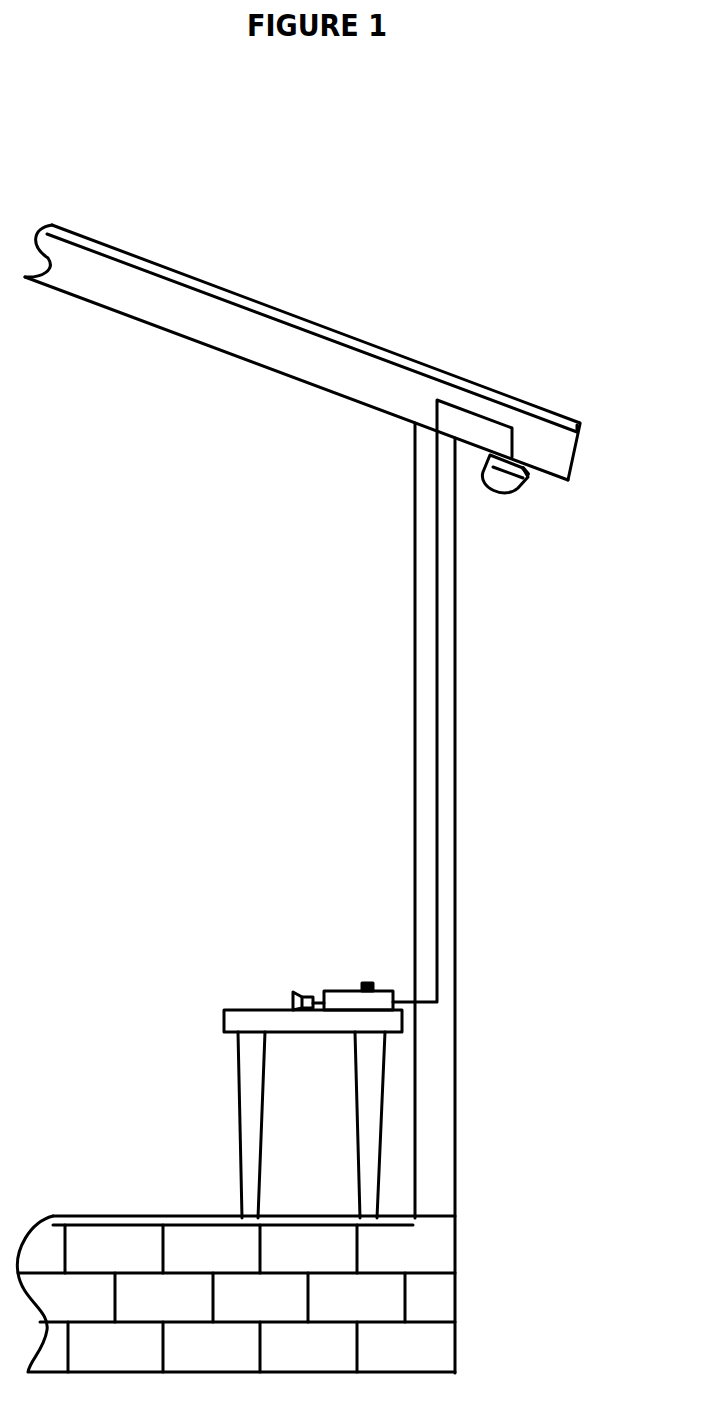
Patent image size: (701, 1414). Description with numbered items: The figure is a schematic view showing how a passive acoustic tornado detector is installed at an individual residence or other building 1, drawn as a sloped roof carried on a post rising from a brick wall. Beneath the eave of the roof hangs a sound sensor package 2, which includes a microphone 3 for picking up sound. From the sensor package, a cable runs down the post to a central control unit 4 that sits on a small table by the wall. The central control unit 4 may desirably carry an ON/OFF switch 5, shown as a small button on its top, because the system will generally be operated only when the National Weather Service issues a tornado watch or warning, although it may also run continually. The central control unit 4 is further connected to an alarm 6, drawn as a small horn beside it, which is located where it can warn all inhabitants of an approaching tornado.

The building 1 is at (485, 270).
The sound sensor package 2 is at (528, 488).
The microphone 3 is at (502, 481).
The central control unit 4 is at (370, 1003).
The ON/OFF switch 5 is at (367, 980).
The alarm 6 is at (292, 1000).